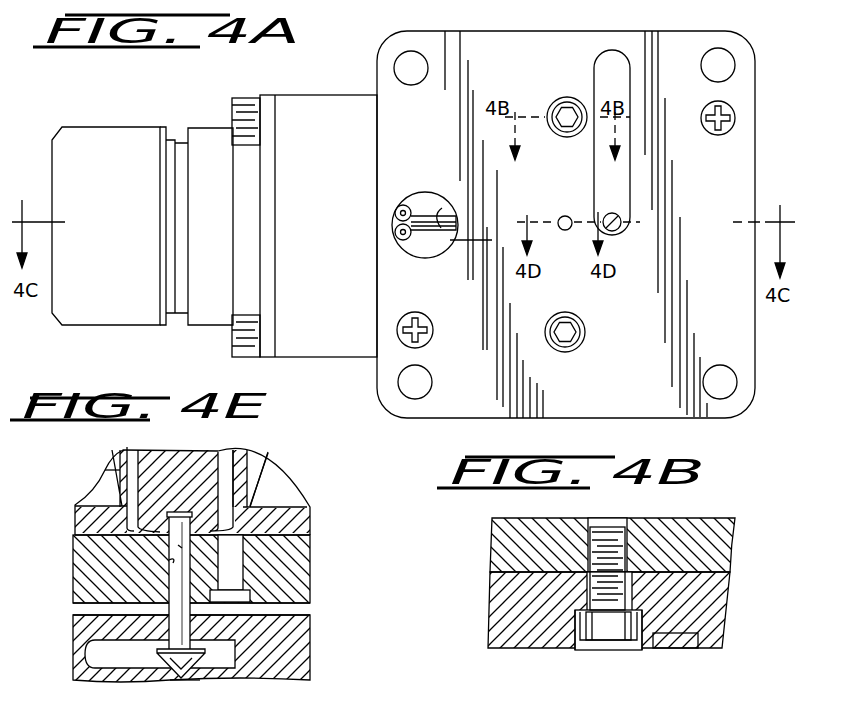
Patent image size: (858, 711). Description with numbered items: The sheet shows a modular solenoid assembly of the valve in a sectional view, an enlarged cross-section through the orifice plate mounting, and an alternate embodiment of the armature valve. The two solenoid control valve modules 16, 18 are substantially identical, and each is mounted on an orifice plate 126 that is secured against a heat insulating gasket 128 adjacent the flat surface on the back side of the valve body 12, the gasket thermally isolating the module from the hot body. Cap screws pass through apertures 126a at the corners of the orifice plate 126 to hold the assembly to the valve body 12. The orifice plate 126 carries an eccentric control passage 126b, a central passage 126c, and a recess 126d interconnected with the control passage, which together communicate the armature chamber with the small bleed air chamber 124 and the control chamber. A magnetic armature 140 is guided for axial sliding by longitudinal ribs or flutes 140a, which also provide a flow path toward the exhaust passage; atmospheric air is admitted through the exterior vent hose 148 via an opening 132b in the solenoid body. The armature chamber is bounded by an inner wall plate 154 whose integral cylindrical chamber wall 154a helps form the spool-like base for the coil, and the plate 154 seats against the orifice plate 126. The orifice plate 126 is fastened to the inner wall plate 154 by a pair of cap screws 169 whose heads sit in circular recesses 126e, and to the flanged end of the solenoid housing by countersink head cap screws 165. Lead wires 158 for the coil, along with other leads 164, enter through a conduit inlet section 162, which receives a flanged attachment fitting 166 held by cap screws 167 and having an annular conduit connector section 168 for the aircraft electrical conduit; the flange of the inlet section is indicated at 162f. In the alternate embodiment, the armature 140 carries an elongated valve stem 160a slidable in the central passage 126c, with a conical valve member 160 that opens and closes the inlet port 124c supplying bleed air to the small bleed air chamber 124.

In FIG. 4E, the valve body 12 is at (310, 646).
In FIG. 4A, the solenoid control valve module 16 is at (600, 446).
In FIG. 4A, the solenoid control valve module 18 is at (594, 435).
In FIG. 4E, the small bleed air chamber 124 is at (94, 654).
In FIG. 4E, the inlet port 124c is at (185, 680).
In FIG. 4A, the orifice plate 126 is at (582, 302).
In FIG. 4E, the orifice plate 126 is at (290, 576).
In FIG. 4B, the orifice plate 126 is at (538, 630).
In FIG. 4A, the apertures 126a is at (404, 54).
In FIG. 4A, the eccentric control passage 126b is at (621, 220).
In FIG. 4A, the central passage 126c is at (568, 216).
In FIG. 4E, the central passage 126c is at (170, 562).
In FIG. 4A, the recess 126d is at (625, 175).
In FIG. 4B, the recess 126d is at (680, 641).
In FIG. 4A, the circular recesses 126e is at (564, 130).
In FIG. 4B, the circular recesses 126e is at (581, 641).
In FIG. 4E, the heat insulating gasket 128 is at (296, 609).
In FIG. 4B, the opening 132b is at (506, 700).
In FIG. 4E, the magnetic armature 140 is at (214, 453).
In FIG. 4E, the ribs or flutes 140a is at (232, 470).
In FIG. 4B, the exterior vent hose 148 is at (418, 693).
In FIG. 4E, the inner wall plate 154 is at (300, 521).
In FIG. 4B, the inner wall plate 154 is at (566, 535).
In FIG. 4E, the cylindrical chamber wall 154a is at (125, 471).
In FIG. 4A, the lead wires 158 is at (442, 208).
In FIG. 4E, the conical valve member 160 is at (197, 667).
In FIG. 4E, the valve stem 160a is at (176, 546).
In FIG. 4A, the conduit inlet section 162 is at (332, 358).
In FIG. 4A, the switch body flange 162f is at (492, 240).
In FIG. 4A, the leads 164 is at (425, 192).
In FIG. 4A, the countersink head cap screws 165 is at (425, 343).
In FIG. 4A, the flanged attachment fitting 166 is at (190, 235).
In FIG. 4A, the cap screws 167 is at (232, 115).
In FIG. 4A, the conduit connector section 168 is at (50, 160).
In FIG. 4A, the cap screws 169 is at (566, 108).
In FIG. 4B, the cap screws 169 is at (598, 627).